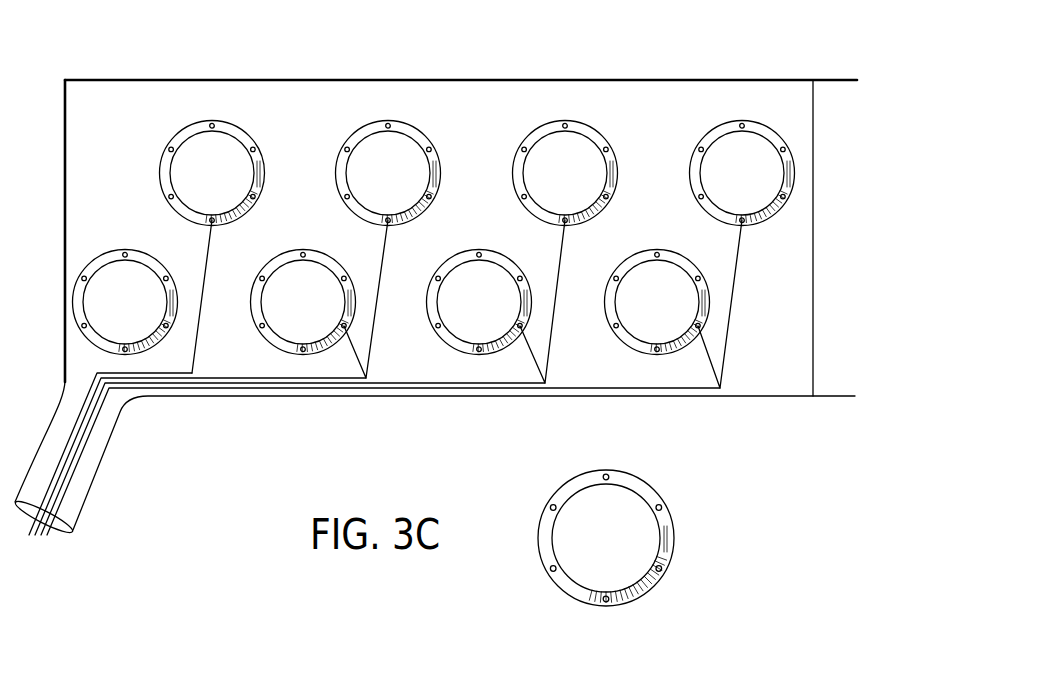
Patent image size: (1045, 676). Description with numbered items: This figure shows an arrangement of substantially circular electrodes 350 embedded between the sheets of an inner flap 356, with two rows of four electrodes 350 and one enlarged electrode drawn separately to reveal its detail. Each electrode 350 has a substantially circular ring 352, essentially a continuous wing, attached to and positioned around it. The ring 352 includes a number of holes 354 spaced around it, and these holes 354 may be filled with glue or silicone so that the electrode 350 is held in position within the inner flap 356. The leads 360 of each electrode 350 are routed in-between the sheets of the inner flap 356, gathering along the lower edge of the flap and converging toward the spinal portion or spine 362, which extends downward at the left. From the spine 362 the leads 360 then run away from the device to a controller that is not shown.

The circular electrode 350 is at (187, 173).
The circular ring 352 is at (675, 540).
The holes 354 is at (662, 508).
The inner flap 356 is at (112, 94).
The leads 360 is at (738, 258).
The spinal portion or spine 362 is at (82, 513).